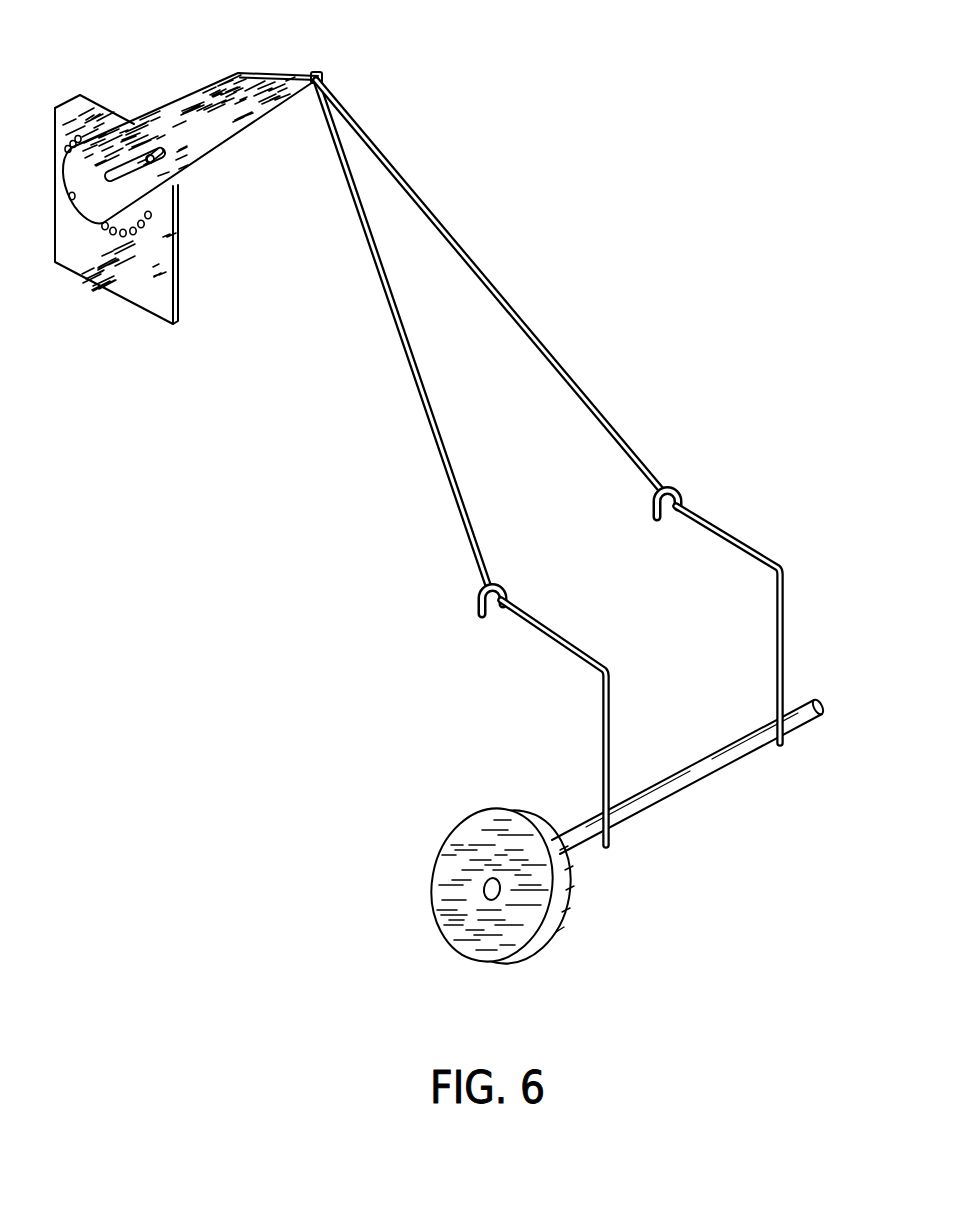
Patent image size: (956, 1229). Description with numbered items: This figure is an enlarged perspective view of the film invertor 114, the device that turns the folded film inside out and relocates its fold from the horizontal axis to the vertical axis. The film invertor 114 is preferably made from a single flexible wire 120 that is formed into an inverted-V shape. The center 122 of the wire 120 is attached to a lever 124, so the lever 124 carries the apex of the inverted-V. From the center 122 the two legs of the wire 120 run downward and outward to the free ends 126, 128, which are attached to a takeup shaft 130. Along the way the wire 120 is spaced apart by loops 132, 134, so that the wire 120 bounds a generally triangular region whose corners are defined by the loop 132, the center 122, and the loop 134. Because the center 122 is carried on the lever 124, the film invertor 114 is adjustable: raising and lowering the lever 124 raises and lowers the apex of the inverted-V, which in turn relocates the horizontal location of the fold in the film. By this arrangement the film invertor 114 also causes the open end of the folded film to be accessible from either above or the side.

The film invertor 114 is at (284, 732).
The flexible wire 120 is at (441, 461).
The center of the wire 122 is at (319, 76).
The lever 124 is at (198, 163).
The free end of the wire 126 is at (603, 849).
The free end of the wire 128 is at (775, 745).
The takeup shaft 130 is at (502, 942).
The loop 132 is at (484, 612).
The loop 134 is at (674, 485).